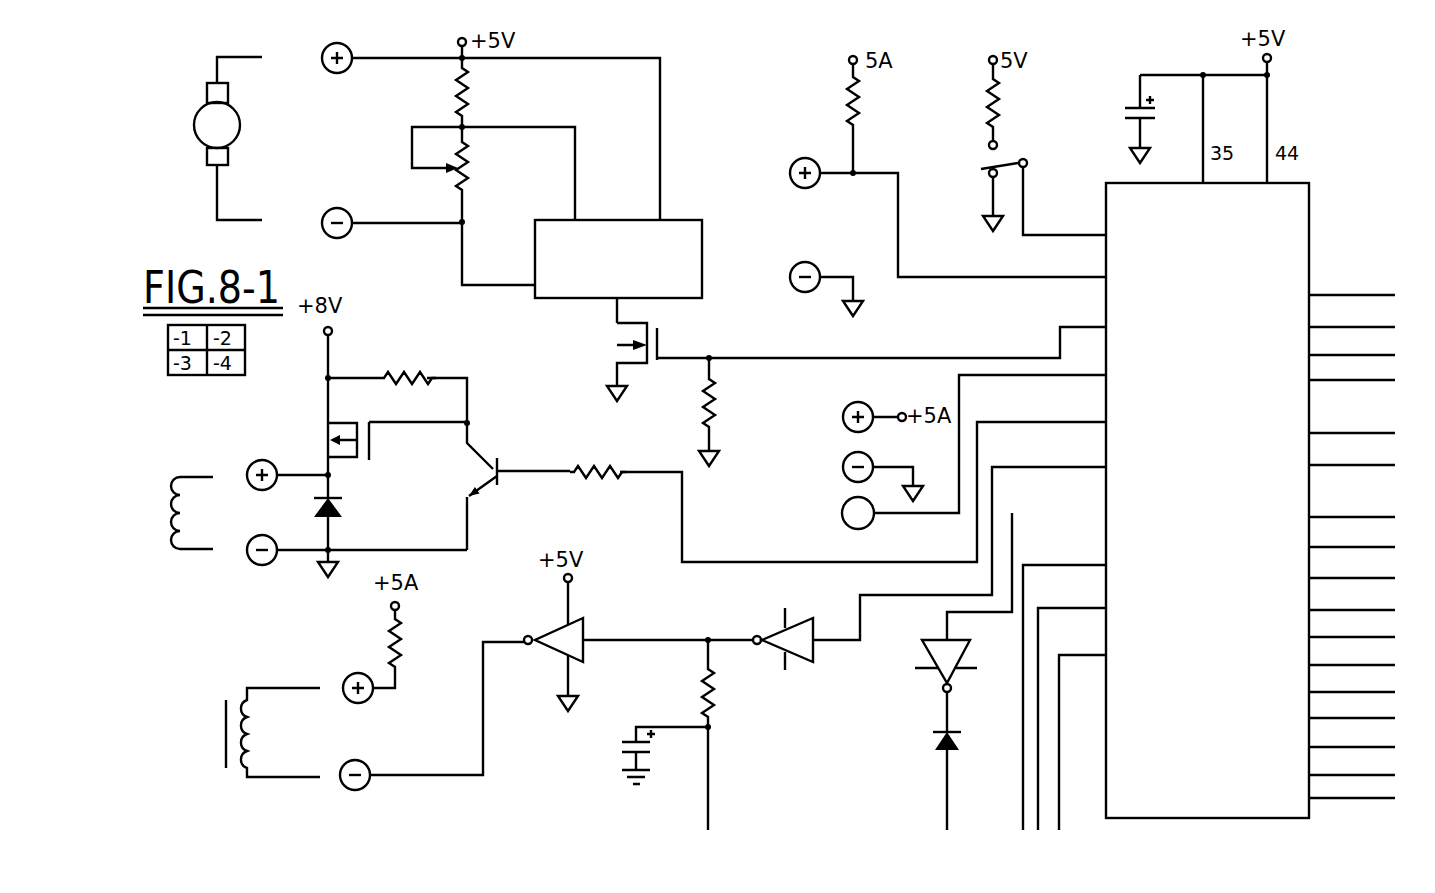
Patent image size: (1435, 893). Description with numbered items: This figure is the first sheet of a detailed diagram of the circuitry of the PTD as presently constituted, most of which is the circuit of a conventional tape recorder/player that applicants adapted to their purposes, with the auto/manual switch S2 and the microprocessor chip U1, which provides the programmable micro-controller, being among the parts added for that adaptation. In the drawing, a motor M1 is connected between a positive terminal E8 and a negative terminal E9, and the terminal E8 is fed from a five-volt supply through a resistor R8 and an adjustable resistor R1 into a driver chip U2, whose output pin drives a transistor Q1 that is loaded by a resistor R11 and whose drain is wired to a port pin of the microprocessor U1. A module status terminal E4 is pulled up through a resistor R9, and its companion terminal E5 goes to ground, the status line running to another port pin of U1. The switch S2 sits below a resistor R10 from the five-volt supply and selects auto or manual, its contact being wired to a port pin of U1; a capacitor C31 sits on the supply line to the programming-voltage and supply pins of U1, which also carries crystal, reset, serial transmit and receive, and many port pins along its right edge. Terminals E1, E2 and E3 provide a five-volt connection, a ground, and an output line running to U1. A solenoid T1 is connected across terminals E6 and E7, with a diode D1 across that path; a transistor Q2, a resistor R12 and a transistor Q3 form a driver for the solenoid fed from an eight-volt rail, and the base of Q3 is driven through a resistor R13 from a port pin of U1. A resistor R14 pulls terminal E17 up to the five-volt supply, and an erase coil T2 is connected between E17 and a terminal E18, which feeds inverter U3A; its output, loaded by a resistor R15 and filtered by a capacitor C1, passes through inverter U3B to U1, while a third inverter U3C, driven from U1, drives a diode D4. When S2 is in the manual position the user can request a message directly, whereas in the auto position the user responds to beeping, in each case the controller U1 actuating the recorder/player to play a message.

The motor M1 is at (261, 138).
The motor positive terminal E8 is at (329, 51).
The motor negative terminal E9 is at (329, 217).
The resistor R8 is at (479, 92).
The potentiometer R1 is at (479, 166).
The motor driver IC U2 is at (604, 259).
The MOSFET transistor Q1 is at (618, 362).
The resistor R11 is at (730, 420).
The module status terminal E4 is at (805, 200).
The resistor R9 is at (870, 101).
The module status return terminal E5 is at (795, 272).
The resistor R10 is at (1018, 103).
The auto/manual switch S2 is at (1045, 152).
The capacitor C31 is at (1121, 119).
The microprocessor chip U1 is at (1152, 804).
The power terminal E1 is at (849, 411).
The ground terminal E2 is at (846, 461).
The output terminal E3 is at (841, 519).
The solenoid T1 is at (197, 513).
The solenoid positive terminal E6 is at (257, 467).
The solenoid negative terminal E7 is at (259, 560).
The diode D1 is at (345, 510).
The MOSFET transistor Q2 is at (366, 441).
The resistor R12 is at (408, 364).
The transistor Q3 is at (470, 477).
The resistor R13 is at (598, 485).
The resistor R14 is at (417, 643).
The erase coil positive terminal E17 is at (359, 674).
The erase coil T2 is at (273, 732).
The erase coil negative terminal E18 is at (348, 785).
The inverter U3A is at (572, 641).
The inverter U3B is at (791, 628).
The inverter U3C is at (932, 665).
The resistor R15 is at (732, 693).
The capacitor C1 is at (655, 757).
The diode D4 is at (926, 744).